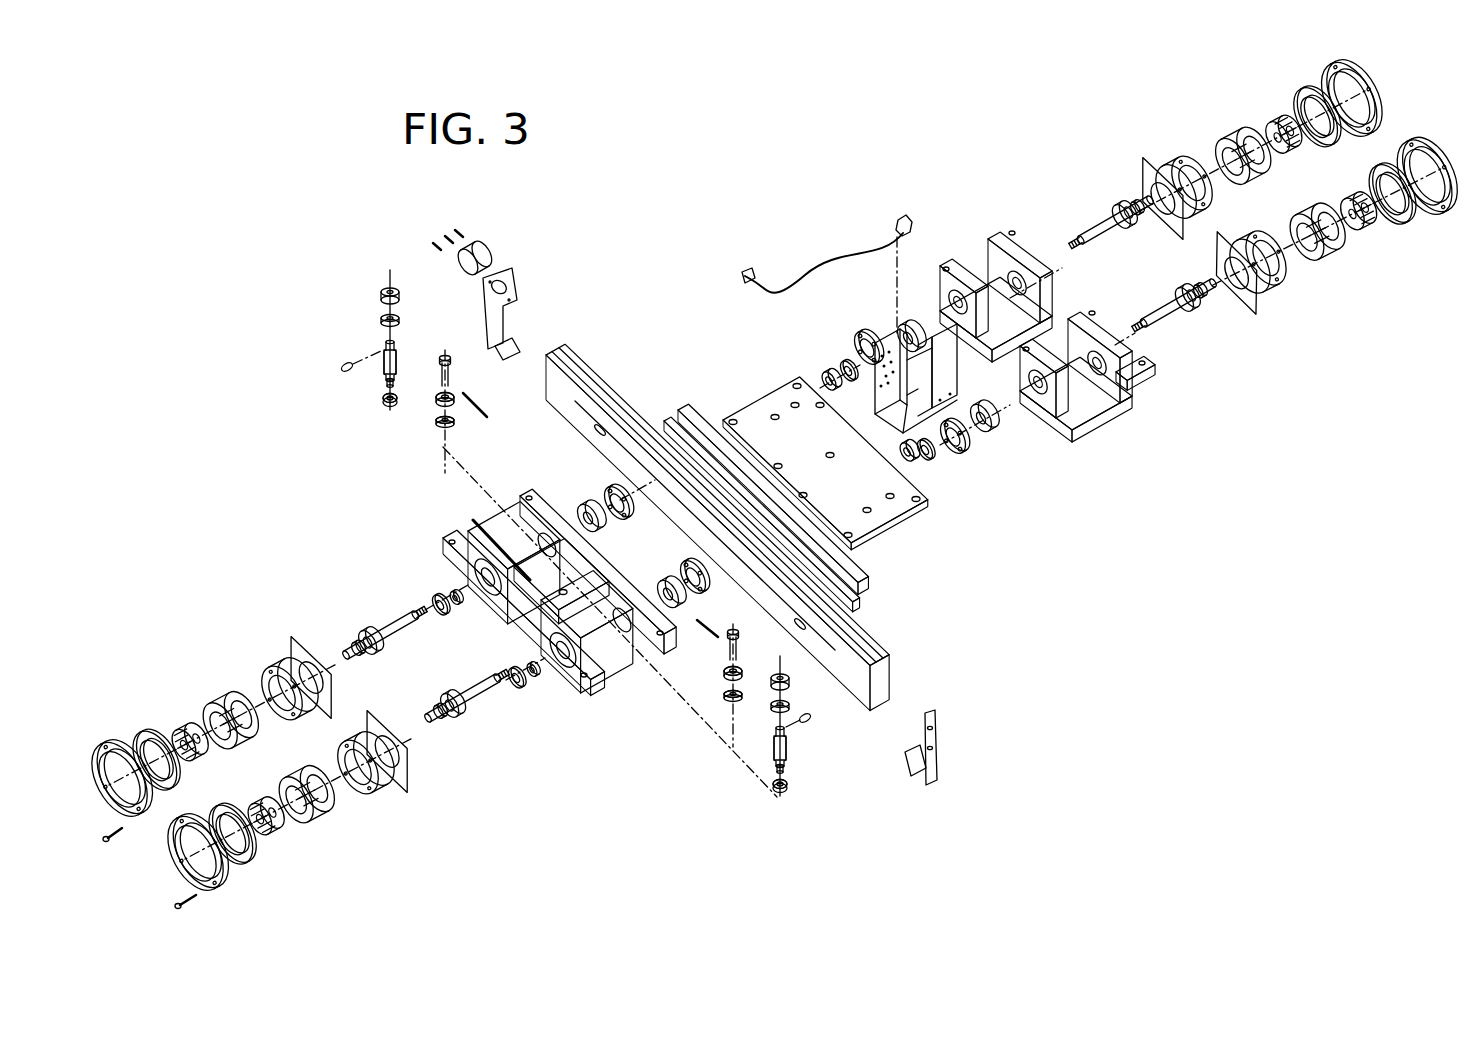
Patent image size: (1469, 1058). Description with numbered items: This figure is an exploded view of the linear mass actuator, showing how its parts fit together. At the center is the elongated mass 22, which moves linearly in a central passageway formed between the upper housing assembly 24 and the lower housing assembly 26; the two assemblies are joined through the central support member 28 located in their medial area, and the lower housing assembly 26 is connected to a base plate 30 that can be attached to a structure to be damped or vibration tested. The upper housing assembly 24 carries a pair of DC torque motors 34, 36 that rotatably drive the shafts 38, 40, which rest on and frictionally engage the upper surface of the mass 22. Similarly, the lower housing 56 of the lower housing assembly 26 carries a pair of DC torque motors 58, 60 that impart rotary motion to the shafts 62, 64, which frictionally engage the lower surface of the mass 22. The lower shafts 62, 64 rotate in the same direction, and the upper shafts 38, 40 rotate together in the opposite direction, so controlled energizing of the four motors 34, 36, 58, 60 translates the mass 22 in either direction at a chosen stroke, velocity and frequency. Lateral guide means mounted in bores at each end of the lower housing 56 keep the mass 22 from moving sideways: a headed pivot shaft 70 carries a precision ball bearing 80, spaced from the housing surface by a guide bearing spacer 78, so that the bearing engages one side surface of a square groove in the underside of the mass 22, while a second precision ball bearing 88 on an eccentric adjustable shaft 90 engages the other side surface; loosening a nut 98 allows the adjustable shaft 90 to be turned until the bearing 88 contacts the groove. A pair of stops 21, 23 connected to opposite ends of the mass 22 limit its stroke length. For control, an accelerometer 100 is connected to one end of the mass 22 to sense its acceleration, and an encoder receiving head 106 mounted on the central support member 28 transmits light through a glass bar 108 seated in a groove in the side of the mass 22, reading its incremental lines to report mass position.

The stop 21 is at (938, 767).
The mass 22 is at (877, 633).
The stop 23 is at (514, 288).
The upper housing assembly 24 is at (975, 255).
The lower housing assembly 26 is at (438, 539).
The central support member 28 is at (883, 332).
The base plate 30 is at (927, 510).
The DC torque motor 34 is at (1225, 113).
The DC torque motor 36 is at (1378, 282).
The shaft 38 is at (1085, 230).
The shaft 40 is at (1180, 317).
The lower housing 56 is at (598, 698).
The DC torque motor 58 is at (358, 830).
The DC torque motor 60 is at (215, 673).
The shaft 62 is at (475, 718).
The shaft 64 is at (395, 618).
The pivot shaft 70 is at (452, 373).
The guide bearing spacer 78 is at (447, 422).
The precision ball bearing 80 is at (440, 400).
The precision ball bearing 88 is at (388, 292).
The adjustable shaft 90 is at (405, 355).
The nut 98 is at (382, 398).
The accelerometer 100 is at (462, 252).
The receiving head 106 is at (910, 228).
The glass bar 108 is at (658, 408).